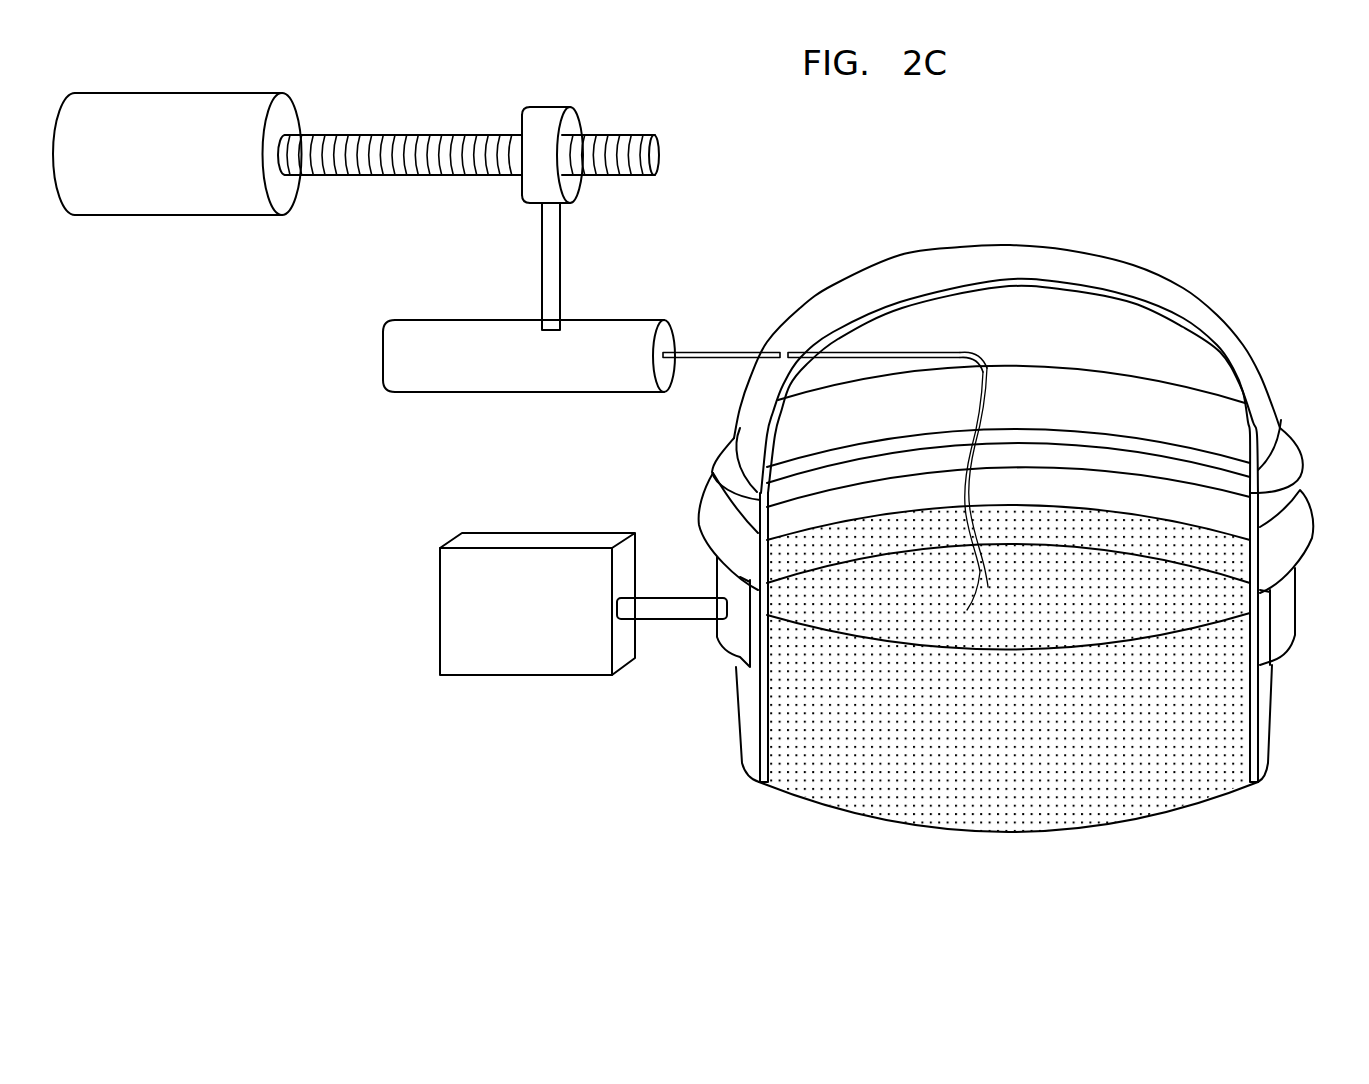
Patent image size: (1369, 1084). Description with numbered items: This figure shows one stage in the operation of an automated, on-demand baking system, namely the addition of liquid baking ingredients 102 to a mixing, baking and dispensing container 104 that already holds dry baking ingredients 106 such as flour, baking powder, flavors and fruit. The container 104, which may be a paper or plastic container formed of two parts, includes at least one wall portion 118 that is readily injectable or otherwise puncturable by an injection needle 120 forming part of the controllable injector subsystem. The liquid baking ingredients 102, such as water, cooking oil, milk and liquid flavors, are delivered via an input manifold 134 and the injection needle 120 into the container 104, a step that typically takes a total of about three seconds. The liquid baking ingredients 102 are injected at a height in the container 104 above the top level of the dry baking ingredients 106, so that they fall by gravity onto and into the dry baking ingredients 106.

The liquid baking ingredients 102 is at (988, 406).
The mixing, baking and dispensing container 104 is at (1263, 700).
The dry baking ingredients 106 is at (1162, 762).
The wall portion 118 is at (802, 317).
The injection needle 120 is at (719, 352).
The input manifold 134 is at (417, 377).